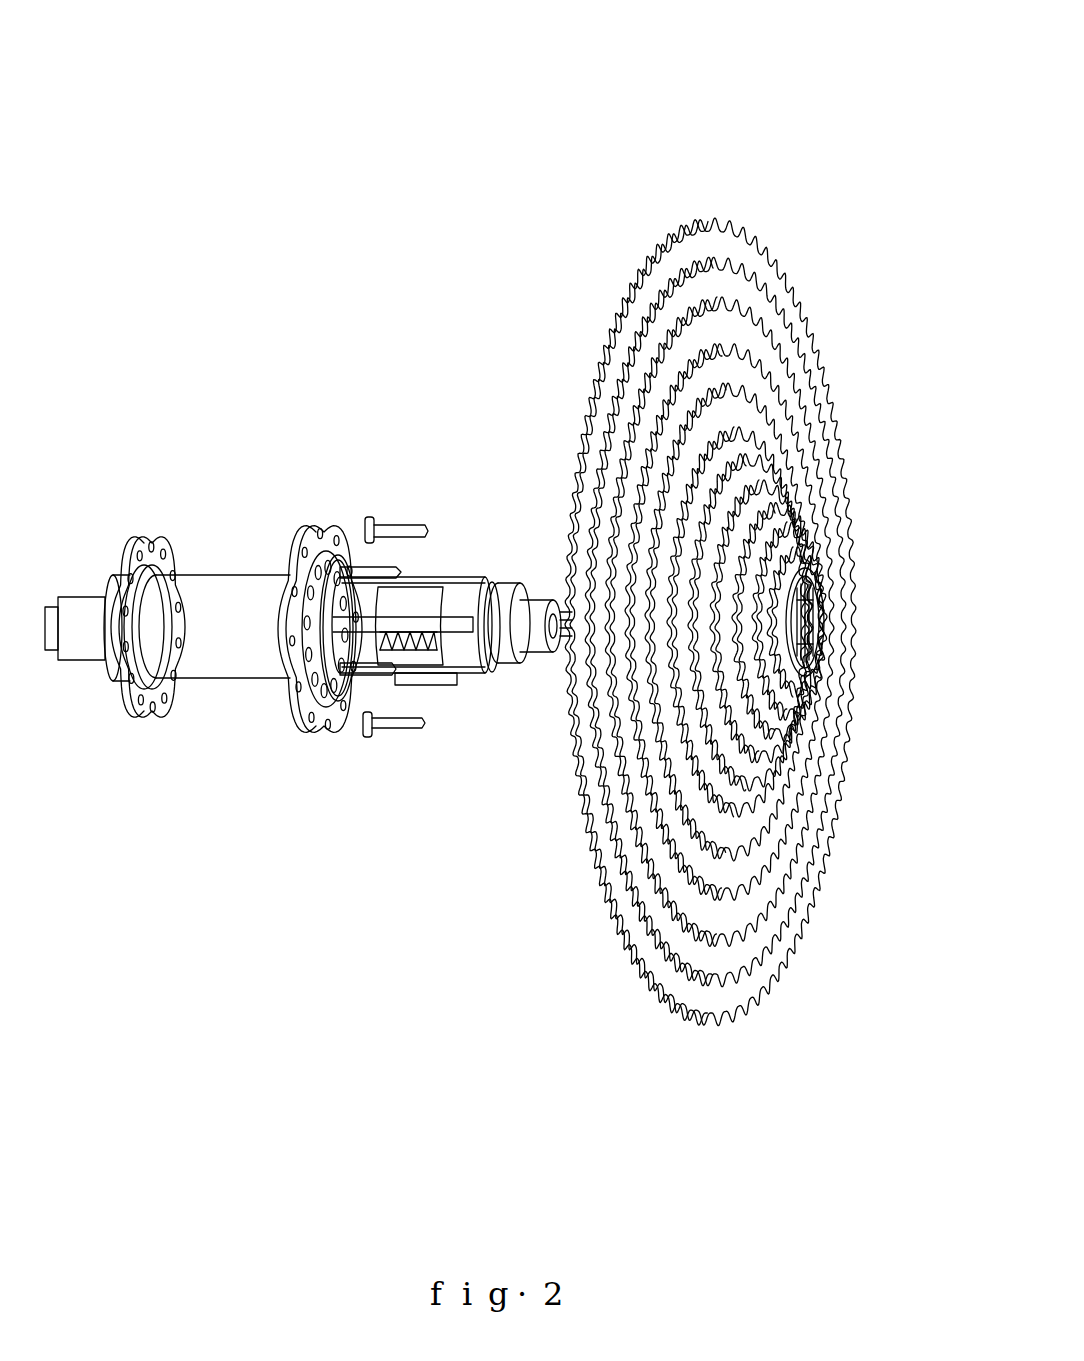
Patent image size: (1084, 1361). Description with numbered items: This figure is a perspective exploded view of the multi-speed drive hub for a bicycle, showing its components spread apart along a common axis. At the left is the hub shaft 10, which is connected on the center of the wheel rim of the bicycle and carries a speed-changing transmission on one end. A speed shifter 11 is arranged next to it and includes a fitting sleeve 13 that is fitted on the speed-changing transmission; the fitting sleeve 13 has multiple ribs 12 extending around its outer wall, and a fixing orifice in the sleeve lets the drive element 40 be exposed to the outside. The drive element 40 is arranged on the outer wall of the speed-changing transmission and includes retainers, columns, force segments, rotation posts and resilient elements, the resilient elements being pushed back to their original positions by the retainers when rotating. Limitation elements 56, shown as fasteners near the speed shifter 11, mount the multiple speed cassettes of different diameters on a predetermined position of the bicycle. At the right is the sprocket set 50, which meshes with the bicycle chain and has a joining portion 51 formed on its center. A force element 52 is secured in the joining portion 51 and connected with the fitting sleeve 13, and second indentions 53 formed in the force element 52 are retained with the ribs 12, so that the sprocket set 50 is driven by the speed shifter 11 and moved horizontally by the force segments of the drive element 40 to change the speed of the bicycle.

The hub shaft 10 is at (213, 408).
The speed shifter 11 is at (425, 455).
The ribs 12 is at (470, 577).
The fitting sleeve 13 is at (462, 643).
The drive element 40 is at (414, 653).
The sprocket set 50 is at (822, 167).
The joining portion 51 is at (795, 612).
The force element 52 is at (820, 657).
The second indentions 53 is at (817, 625).
The limitation elements 56 is at (390, 730).